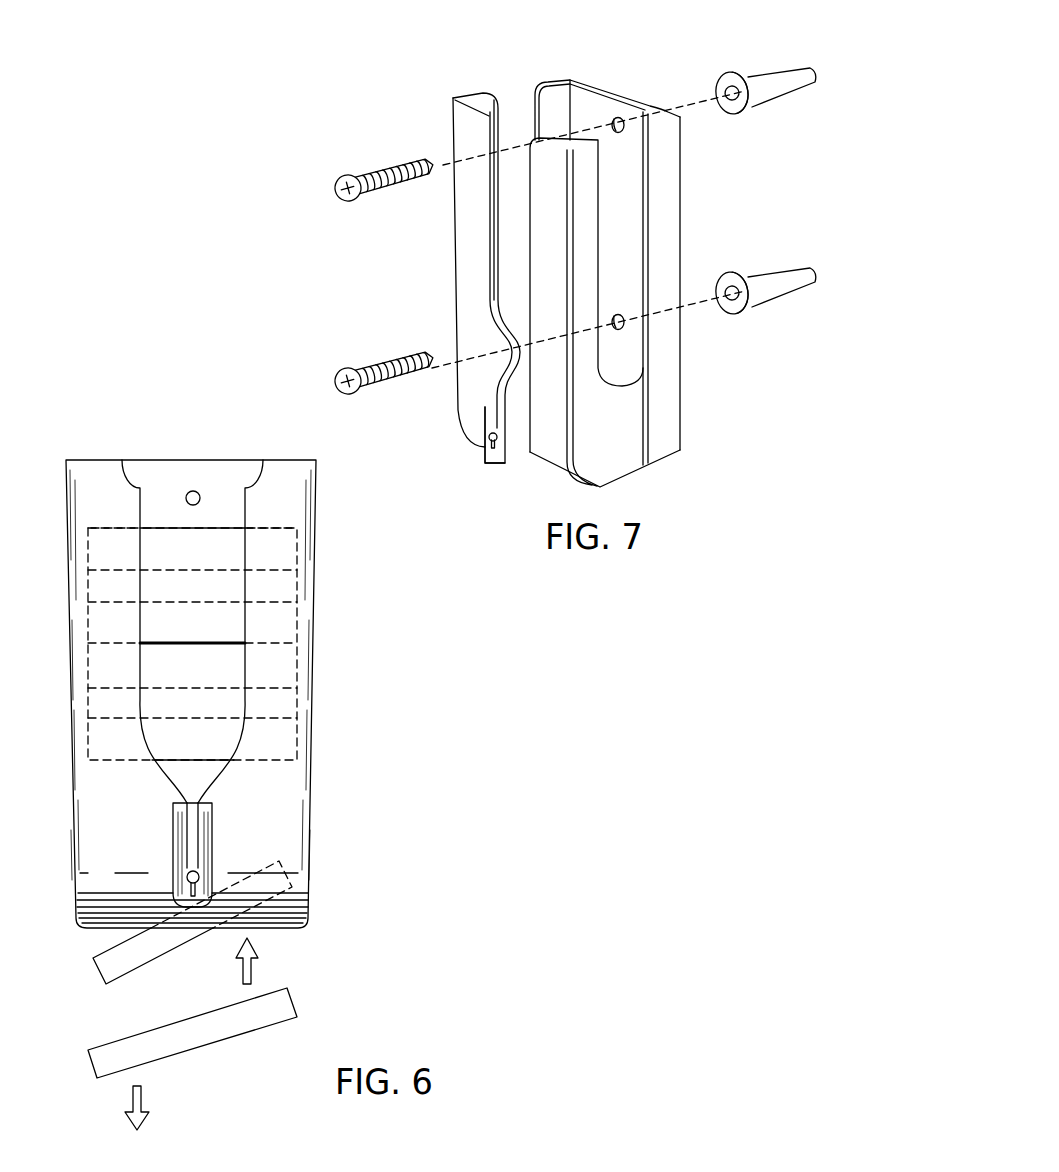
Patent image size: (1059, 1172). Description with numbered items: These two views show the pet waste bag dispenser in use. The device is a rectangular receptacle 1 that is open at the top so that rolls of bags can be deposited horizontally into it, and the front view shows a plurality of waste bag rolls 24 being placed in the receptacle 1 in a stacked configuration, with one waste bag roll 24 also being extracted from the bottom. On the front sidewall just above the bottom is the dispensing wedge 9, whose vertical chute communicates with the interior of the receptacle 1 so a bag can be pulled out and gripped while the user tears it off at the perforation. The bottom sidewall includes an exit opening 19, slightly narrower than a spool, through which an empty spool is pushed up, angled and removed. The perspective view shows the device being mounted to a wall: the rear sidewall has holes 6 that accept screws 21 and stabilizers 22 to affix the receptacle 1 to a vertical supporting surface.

In FIG. 7, the rectangular receptacle 1 is at (430, 97).
In FIG. 7, the holes 6 is at (612, 132).
In FIG. 7, the dispensing wedge 9 is at (512, 450).
In FIG. 6, the dispensing wedge 9 is at (192, 855).
In FIG. 6, the exit opening 19 is at (277, 929).
In FIG. 7, the screws 21 is at (377, 172).
In FIG. 7, the stabilizers 22 is at (775, 77).
In FIG. 6, the waste bag roll 24 is at (173, 558).